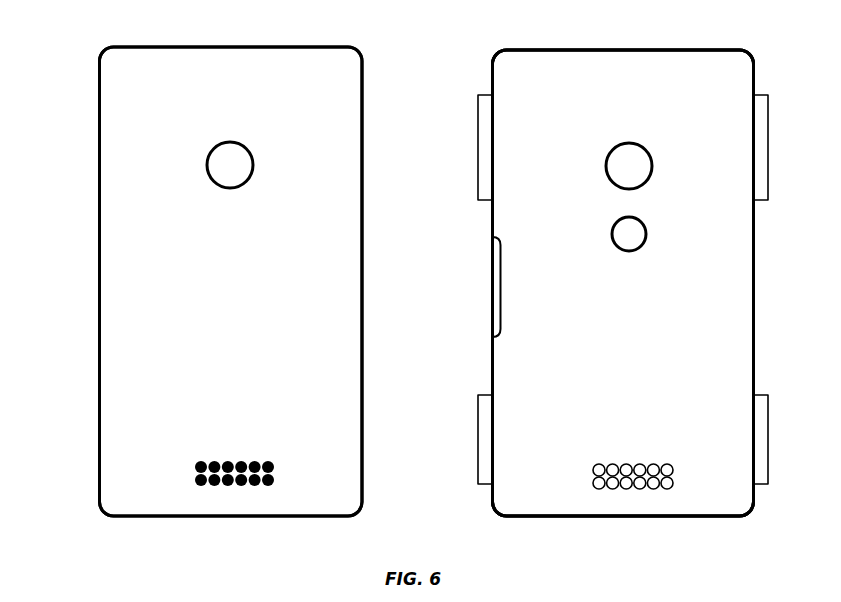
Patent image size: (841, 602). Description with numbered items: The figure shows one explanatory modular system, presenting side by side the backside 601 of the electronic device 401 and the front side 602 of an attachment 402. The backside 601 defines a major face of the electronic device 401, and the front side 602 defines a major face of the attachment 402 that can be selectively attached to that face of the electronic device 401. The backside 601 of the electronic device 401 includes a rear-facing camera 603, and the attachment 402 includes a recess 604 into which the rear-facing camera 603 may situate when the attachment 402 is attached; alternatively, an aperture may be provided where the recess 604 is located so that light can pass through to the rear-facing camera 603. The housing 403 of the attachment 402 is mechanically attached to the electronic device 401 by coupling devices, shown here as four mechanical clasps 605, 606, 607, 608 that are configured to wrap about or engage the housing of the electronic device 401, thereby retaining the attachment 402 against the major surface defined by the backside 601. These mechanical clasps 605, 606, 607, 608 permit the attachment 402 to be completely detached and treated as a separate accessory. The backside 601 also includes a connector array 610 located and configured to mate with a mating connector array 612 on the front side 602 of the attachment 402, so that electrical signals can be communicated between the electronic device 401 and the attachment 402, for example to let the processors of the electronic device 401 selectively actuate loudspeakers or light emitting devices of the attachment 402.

The electronic device 401 is at (75, 163).
The attachment 402 is at (448, 163).
The housing 403 is at (757, 62).
The backside 601 is at (172, 342).
The front side 602 is at (619, 78).
The rear-facing camera 603 is at (251, 152).
The recess 604 is at (605, 166).
The mechanical clasp 605 is at (477, 184).
The mechanical clasp 606 is at (476, 438).
The mechanical clasp 607 is at (770, 185).
The mechanical clasp 608 is at (770, 420).
The connector array 610 is at (227, 461).
The mating connector array 612 is at (627, 463).